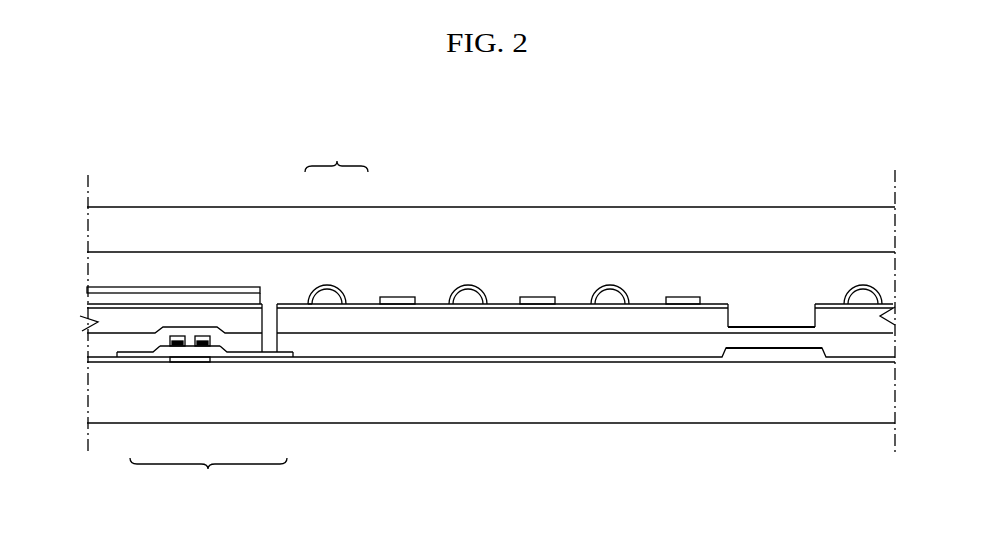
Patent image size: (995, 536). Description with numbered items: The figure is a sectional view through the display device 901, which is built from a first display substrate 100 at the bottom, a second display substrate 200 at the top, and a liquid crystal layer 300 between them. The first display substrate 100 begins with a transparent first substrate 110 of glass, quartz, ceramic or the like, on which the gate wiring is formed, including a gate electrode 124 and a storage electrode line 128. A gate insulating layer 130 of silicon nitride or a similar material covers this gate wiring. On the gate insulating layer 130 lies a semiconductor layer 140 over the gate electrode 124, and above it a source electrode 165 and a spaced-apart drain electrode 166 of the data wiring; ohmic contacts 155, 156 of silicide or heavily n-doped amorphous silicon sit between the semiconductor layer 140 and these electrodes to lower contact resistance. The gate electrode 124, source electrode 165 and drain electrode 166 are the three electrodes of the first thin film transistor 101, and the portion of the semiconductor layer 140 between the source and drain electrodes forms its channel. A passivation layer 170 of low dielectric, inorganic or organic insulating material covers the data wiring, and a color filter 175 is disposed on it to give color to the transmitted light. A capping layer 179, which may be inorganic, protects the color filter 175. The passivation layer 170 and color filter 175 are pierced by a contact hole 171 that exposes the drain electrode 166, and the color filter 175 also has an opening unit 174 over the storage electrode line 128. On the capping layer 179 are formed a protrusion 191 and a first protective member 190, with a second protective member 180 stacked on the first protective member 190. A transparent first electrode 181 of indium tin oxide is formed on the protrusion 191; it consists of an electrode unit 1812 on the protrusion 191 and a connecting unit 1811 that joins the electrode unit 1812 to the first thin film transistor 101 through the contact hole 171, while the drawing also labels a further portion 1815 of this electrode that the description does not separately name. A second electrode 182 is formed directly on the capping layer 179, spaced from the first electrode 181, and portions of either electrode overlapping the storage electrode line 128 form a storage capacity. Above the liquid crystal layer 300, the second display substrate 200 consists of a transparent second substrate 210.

The first display substrate 100 is at (100, 480).
The first thin film transistor 101 is at (208, 474).
The first substrate 110 is at (723, 405).
The gate electrode 124 is at (190, 362).
The storage electrode line 128 is at (770, 352).
The gate insulating layer 130 is at (357, 359).
The semiconductor layer 140 is at (197, 352).
The ohmic contact 155 is at (186, 347).
The ohmic contact 156 is at (205, 346).
The source electrode 165 is at (175, 347).
The drain electrode 166 is at (212, 347).
The passivation layer 170 is at (95, 349).
The contact hole 171 is at (268, 318).
The opening unit 174 is at (745, 305).
The color filter 175 is at (108, 327).
The capping layer 179 is at (247, 303).
The second protective member 180 is at (168, 292).
The first electrode 181 is at (858, 283).
The connecting unit 1811 is at (296, 296).
The electrode unit 1812 is at (325, 284).
The spacer portion 1815 is at (772, 327).
The second electrode 182 is at (400, 297).
The first protective member 190 is at (97, 302).
The protrusion 191 is at (332, 291).
The second display substrate 200 is at (104, 178).
The second substrate 210 is at (218, 218).
The liquid crystal layer 300 is at (100, 267).
The display device 901 is at (568, 131).